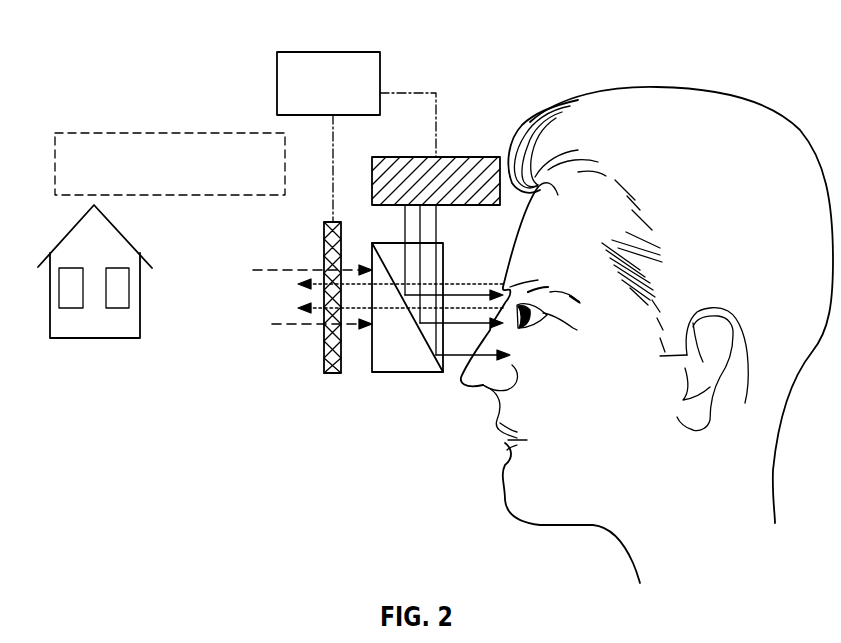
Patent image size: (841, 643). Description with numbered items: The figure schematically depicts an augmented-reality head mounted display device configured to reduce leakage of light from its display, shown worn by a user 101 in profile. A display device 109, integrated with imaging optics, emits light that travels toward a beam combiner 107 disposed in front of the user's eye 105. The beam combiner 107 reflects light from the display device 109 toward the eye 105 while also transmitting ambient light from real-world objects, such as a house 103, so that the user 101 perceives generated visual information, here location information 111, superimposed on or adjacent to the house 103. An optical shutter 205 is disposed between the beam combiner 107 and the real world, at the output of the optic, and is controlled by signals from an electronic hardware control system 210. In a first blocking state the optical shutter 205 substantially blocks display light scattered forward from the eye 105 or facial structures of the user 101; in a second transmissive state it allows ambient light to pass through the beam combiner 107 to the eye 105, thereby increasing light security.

The user 101 is at (732, 70).
The house 103 is at (54, 250).
The user's eye 105 is at (547, 317).
The beam combiner 107 is at (400, 373).
The display device 109 is at (420, 157).
The location information 111 is at (108, 133).
The optical shutter 205 is at (322, 360).
The electronic hardware control system 210 is at (330, 51).